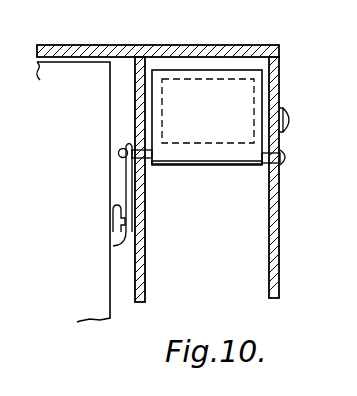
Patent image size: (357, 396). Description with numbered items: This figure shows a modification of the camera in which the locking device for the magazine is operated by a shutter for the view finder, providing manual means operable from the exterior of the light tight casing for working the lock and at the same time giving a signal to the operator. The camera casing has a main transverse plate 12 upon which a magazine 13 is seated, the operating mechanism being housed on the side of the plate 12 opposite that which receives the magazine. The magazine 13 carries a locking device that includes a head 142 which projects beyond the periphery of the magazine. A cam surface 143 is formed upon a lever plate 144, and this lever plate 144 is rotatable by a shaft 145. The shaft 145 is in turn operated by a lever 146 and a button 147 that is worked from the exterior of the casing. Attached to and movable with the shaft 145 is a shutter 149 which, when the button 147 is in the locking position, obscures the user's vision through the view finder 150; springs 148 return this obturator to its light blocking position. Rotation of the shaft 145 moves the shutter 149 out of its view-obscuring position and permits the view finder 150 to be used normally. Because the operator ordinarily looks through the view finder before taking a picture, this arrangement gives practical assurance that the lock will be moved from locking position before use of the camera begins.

The main transverse plate 12 is at (146, 258).
The magazine 13 is at (73, 192).
The head 142 is at (112, 233).
The cam surface 143 is at (123, 240).
The lever plate 144 is at (127, 175).
The shaft 145 is at (122, 151).
The lever 146 is at (286, 150).
The button 147 is at (293, 118).
The springs 148 is at (258, 168).
The shutter 149 is at (258, 100).
The view finder 150 is at (208, 78).